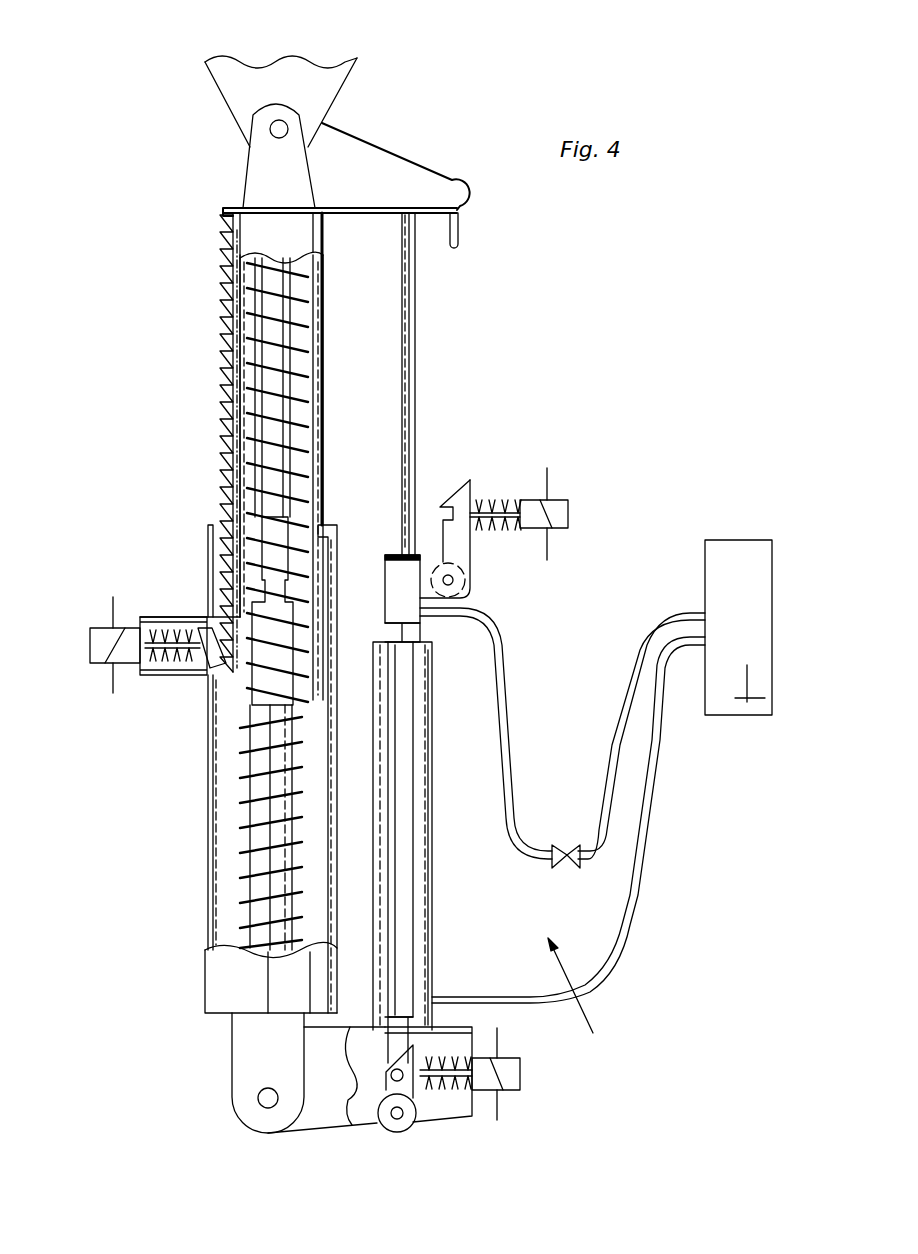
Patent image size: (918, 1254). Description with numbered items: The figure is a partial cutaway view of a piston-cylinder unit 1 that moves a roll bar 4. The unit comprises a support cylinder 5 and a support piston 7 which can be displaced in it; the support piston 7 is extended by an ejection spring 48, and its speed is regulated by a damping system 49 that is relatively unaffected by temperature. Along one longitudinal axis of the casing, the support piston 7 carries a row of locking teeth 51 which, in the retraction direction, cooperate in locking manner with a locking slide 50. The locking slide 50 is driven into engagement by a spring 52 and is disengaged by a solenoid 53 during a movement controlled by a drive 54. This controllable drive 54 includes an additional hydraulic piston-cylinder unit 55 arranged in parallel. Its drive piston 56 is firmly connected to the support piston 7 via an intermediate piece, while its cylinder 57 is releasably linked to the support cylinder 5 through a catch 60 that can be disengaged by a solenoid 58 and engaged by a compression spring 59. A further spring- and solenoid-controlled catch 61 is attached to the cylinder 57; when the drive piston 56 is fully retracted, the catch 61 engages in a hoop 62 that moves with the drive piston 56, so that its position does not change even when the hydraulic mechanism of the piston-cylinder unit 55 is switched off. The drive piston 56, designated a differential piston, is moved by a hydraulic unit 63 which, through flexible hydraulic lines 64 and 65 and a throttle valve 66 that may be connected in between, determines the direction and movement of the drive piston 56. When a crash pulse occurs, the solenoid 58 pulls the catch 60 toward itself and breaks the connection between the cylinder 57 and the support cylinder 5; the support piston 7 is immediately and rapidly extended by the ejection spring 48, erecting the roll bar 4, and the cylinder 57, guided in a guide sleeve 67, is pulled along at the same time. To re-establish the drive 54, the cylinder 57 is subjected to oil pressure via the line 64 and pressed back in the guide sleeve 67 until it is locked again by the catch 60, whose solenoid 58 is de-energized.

The piston-cylinder unit 1 is at (206, 536).
The roll bar 4 is at (278, 78).
The support cylinder 5 is at (207, 842).
The support piston 7 is at (318, 350).
The ejection spring 48 is at (251, 410).
The damping system 49 is at (250, 590).
The locking slide 50 is at (198, 677).
The locking teeth 51 is at (225, 302).
The spring 52 is at (170, 677).
The solenoid 53 is at (92, 628).
The drive 54 is at (579, 997).
The hydraulic piston-cylinder unit 55 is at (439, 637).
The drive piston 56 is at (410, 367).
The cylinder 57 is at (410, 723).
The solenoid 58 is at (520, 1078).
The compression spring 59 is at (470, 1118).
The catch 60 is at (415, 1115).
The catch 61 is at (456, 472).
The hoop 62 is at (460, 232).
The hydraulic unit 63 is at (738, 543).
The hydraulic line 64 is at (627, 903).
The hydraulic line 65 is at (632, 712).
The throttle valve 66 is at (565, 843).
The guide sleeve 67 is at (430, 862).